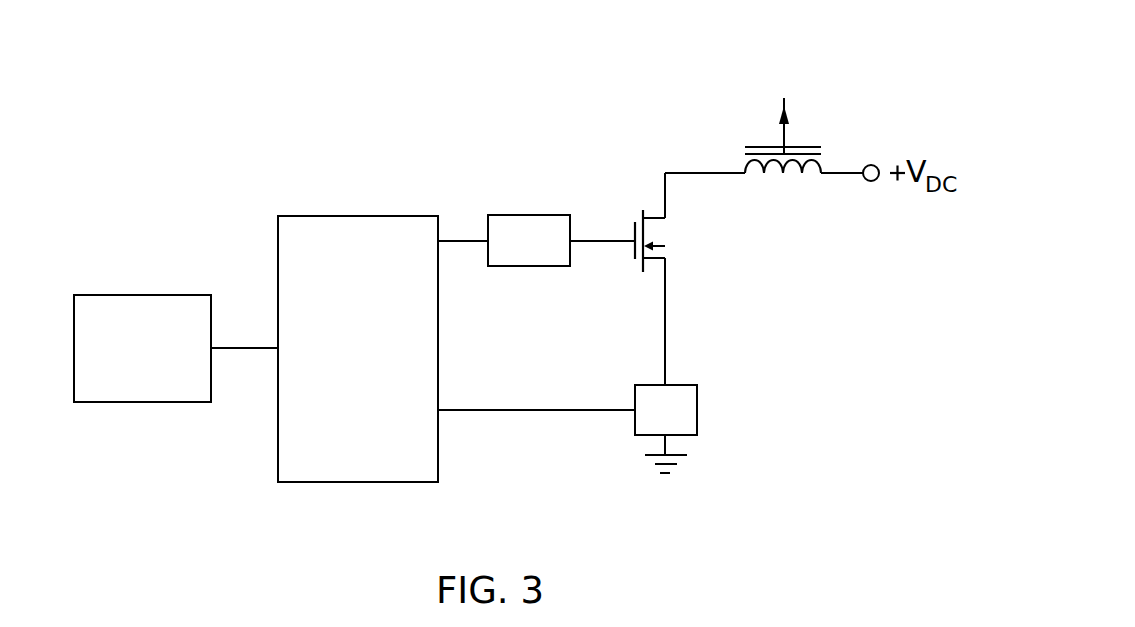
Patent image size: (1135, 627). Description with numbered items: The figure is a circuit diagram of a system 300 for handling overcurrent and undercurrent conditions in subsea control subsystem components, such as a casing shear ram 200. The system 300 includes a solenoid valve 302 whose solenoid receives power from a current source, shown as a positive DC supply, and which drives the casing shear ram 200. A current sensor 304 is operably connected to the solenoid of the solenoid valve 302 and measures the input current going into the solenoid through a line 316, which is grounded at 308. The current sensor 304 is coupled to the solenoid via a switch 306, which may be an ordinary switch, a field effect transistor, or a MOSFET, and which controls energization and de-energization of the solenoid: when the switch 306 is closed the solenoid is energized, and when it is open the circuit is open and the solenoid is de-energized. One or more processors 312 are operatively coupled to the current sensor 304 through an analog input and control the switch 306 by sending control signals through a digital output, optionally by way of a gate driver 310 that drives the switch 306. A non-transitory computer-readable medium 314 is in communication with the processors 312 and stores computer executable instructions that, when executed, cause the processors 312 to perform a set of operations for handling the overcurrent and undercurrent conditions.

The system 300 is at (473, 124).
The computer-readable medium 314 is at (132, 295).
The processors 312 is at (438, 343).
The gate driver 310 is at (527, 215).
The switch 306 is at (666, 241).
The line 316 is at (665, 314).
The current sensor 304 is at (687, 385).
The ground 308 is at (676, 453).
The solenoid valve 302 is at (800, 146).
The casing shear ram 200 is at (782, 132).